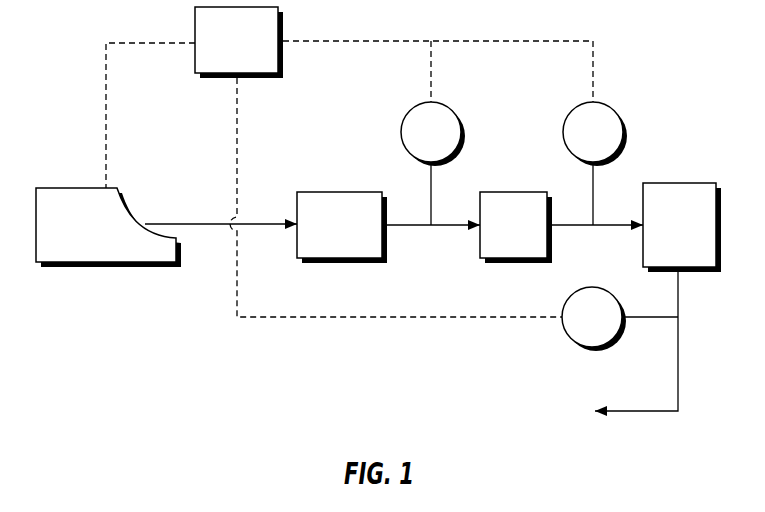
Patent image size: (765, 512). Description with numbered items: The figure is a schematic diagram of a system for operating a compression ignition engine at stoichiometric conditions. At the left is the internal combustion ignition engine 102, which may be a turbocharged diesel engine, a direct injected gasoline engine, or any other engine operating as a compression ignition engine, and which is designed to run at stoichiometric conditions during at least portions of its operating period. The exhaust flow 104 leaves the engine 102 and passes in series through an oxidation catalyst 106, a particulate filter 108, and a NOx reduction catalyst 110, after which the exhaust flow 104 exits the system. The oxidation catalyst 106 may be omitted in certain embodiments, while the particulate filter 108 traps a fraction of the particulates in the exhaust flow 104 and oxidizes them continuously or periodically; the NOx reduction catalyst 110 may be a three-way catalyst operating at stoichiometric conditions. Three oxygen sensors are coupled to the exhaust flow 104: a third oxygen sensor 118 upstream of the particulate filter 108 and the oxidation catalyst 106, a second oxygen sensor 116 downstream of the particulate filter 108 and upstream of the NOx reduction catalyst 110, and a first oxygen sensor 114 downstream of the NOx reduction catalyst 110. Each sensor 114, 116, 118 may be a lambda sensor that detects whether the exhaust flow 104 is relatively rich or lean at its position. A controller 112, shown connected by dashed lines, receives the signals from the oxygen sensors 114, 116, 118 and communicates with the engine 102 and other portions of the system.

The internal combustion ignition engine 102 is at (67, 237).
The exhaust flow 104 is at (193, 222).
The oxidation catalyst 106 is at (321, 239).
The particulate filter 108 is at (494, 239).
The NOx reduction catalyst 110 is at (661, 239).
The controller 112 is at (217, 54).
The first oxygen sensor 114 is at (562, 308).
The second oxygen sensor 116 is at (563, 130).
The third oxygen sensor 118 is at (402, 130).